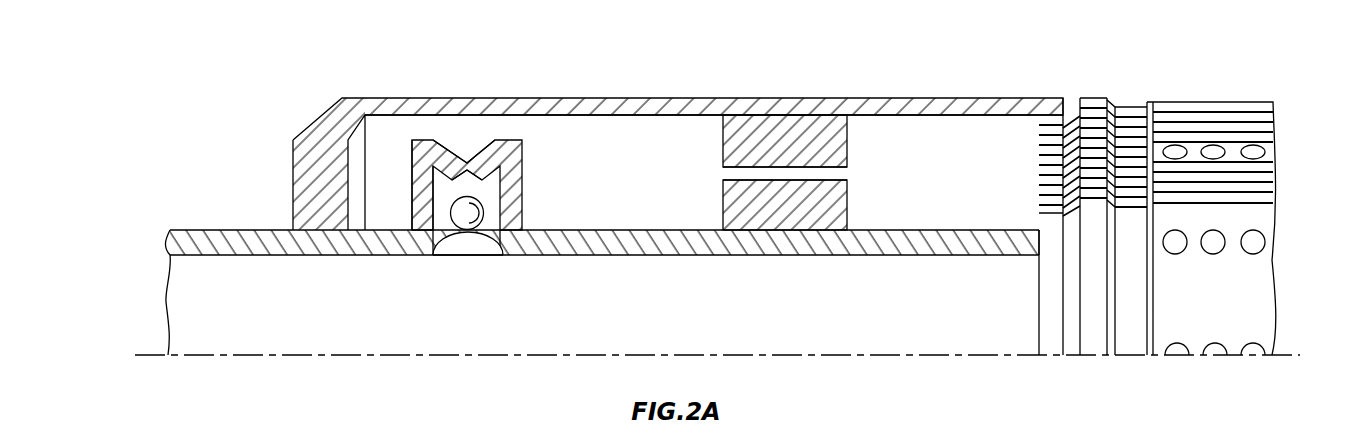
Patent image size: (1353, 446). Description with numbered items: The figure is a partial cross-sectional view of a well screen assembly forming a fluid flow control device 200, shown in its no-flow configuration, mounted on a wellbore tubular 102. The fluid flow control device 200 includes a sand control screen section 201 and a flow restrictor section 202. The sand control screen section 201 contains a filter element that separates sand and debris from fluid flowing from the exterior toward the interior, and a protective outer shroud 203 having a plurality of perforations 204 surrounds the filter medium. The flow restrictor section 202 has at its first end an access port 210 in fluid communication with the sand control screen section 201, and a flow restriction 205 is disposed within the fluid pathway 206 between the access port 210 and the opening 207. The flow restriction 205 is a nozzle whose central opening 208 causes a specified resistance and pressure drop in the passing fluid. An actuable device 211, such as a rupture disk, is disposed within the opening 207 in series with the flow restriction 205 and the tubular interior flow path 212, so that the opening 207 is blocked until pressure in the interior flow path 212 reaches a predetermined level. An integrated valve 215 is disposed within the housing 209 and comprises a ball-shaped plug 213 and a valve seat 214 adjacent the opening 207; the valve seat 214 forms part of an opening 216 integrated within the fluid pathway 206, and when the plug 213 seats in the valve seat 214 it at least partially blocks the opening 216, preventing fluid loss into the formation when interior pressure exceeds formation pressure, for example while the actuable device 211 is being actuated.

The fluid flow control device 200 is at (228, 92).
The wellbore tubular 102 is at (238, 255).
The sand control screen section 201 is at (1232, 197).
The flow restrictor section 202 is at (1049, 91).
The protective outer shroud 203 is at (1207, 112).
The perforations 204 is at (1255, 147).
The flow restriction 205 is at (847, 142).
The fluid pathway 206 is at (686, 212).
The opening 207 is at (433, 266).
The central opening 208 is at (840, 173).
The housing 209 is at (798, 98).
The access port 210 is at (1039, 157).
The actuable device 211 is at (475, 251).
The interior flow path 212 is at (784, 323).
The plug 213 is at (482, 203).
The valve seat 214 is at (412, 188).
The integrated valve 215 is at (427, 147).
The opening 216 is at (462, 157).